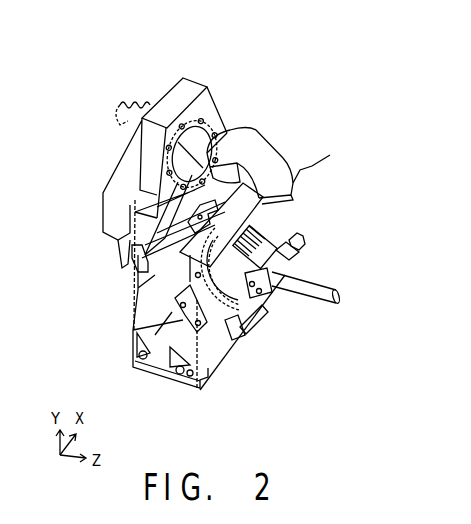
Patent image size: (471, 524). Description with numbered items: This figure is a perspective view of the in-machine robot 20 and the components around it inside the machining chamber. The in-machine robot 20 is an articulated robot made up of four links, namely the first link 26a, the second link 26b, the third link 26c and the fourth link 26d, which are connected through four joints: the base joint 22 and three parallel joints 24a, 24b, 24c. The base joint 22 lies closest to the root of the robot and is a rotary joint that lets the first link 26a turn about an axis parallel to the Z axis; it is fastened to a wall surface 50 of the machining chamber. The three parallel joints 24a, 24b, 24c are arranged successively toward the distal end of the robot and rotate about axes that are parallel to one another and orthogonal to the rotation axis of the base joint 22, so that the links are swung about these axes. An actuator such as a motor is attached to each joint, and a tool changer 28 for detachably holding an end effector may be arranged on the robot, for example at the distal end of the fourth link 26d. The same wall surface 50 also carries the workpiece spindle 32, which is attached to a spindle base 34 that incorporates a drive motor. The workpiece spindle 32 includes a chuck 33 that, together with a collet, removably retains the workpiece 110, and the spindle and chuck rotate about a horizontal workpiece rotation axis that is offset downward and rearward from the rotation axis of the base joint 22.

The in-machine robot 20 is at (253, 101).
The base joint 22 is at (207, 106).
The first parallel joint 24a is at (135, 240).
The second parallel joint 24b is at (301, 178).
The third parallel joint 24c is at (195, 265).
The first link 26a is at (167, 161).
The second link 26b is at (266, 146).
The third link 26c is at (280, 207).
The fourth link 26d is at (225, 300).
The tool changer 28 is at (300, 258).
The workpiece spindle 32 is at (157, 325).
The chuck 33 is at (275, 298).
The spindle base 34 is at (210, 275).
The wall surface 50 is at (223, 121).
The workpiece 110 is at (318, 305).